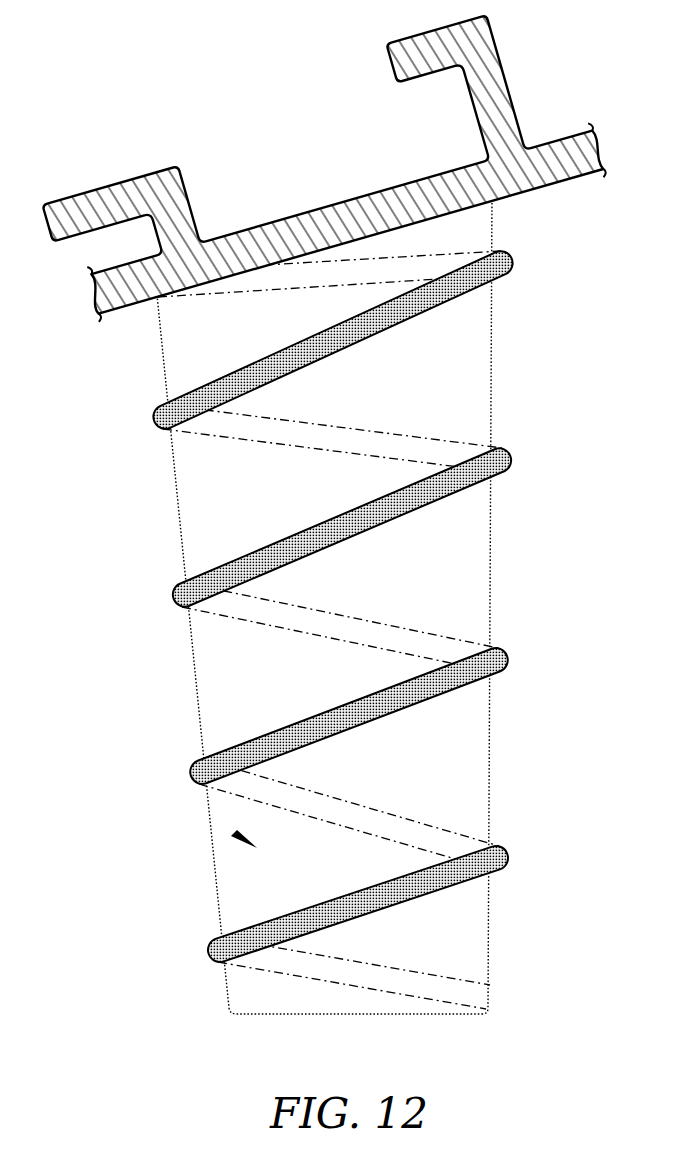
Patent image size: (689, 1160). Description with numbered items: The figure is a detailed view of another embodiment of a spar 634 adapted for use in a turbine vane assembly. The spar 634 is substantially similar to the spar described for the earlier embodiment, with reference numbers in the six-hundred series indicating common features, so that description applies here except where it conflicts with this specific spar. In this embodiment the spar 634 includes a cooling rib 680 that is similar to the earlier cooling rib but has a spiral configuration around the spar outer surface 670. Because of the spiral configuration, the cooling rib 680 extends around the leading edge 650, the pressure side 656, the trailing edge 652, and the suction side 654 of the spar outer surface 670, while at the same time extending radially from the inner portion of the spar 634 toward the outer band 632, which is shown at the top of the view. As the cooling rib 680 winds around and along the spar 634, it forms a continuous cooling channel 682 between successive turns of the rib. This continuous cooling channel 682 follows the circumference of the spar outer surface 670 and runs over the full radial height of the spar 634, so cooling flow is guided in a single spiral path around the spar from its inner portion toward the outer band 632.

The outer band 632 is at (493, 32).
The spar 634 is at (499, 325).
The leading edge 650 is at (348, 604).
The trailing edge 652 is at (406, 606).
The suction side 654 is at (217, 827).
The pressure side 656 is at (430, 728).
The spar outer surface 670 is at (422, 387).
The cooling rib 680 is at (513, 461).
The continuous cooling channel 682 is at (240, 485).